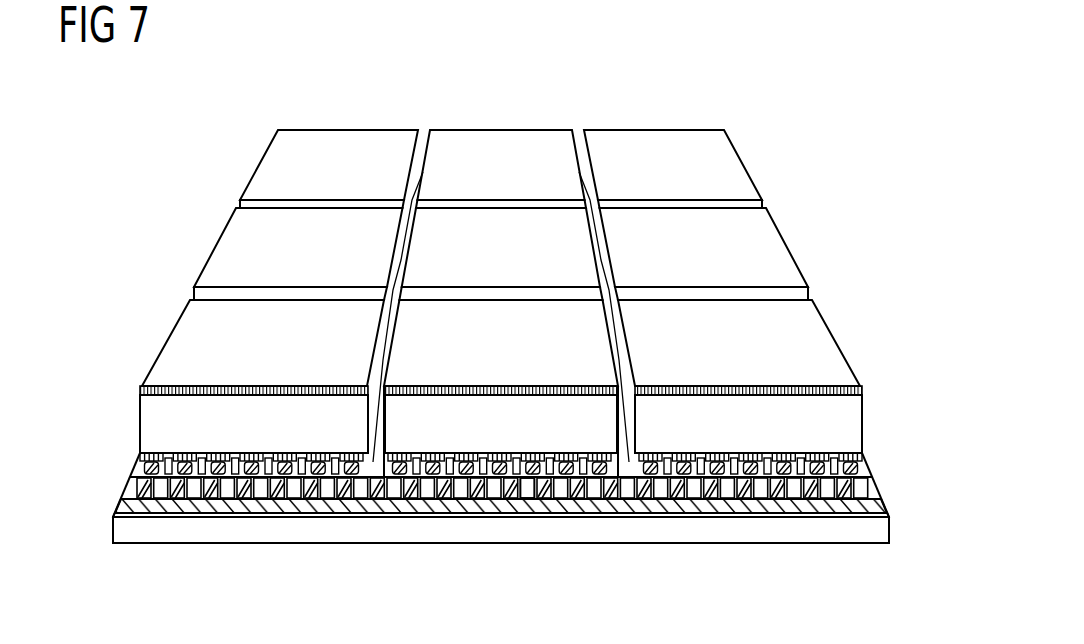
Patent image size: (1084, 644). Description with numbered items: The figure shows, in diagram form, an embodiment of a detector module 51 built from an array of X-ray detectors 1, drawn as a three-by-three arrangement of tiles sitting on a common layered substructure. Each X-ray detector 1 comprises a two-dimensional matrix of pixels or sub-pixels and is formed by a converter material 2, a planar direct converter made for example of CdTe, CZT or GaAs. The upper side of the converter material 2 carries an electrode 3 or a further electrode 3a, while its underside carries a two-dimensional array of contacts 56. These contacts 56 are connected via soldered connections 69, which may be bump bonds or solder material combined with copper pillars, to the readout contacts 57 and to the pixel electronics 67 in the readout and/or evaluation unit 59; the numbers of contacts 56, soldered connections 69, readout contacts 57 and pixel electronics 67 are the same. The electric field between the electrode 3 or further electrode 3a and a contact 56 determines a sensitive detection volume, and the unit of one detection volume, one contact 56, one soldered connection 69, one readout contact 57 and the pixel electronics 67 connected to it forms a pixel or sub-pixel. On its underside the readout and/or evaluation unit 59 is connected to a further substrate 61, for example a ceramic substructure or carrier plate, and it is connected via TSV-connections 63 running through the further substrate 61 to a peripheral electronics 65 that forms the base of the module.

The detector module 51 is at (193, 170).
The X-ray detector 1 is at (815, 343).
The converter material 2 is at (847, 415).
The electrode 3 is at (140, 390).
The further electrode 3a is at (501, 390).
The soldered connections 69 is at (140, 460).
The contacts 56 is at (858, 461).
The readout contacts 57 is at (143, 480).
The pixel electronics 67 is at (522, 499).
The readout and/or evaluation unit 59 is at (884, 481).
The further substrate 61 is at (868, 505).
The TSV-connections 63 is at (690, 514).
The peripheral electronics 65 is at (877, 530).